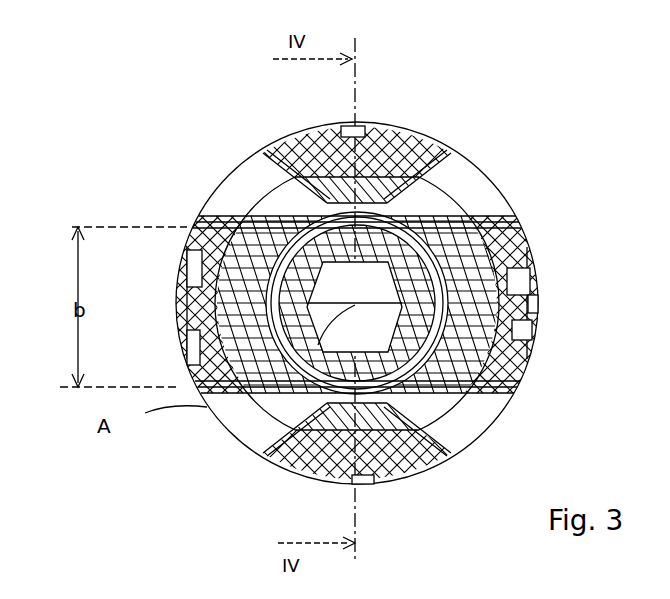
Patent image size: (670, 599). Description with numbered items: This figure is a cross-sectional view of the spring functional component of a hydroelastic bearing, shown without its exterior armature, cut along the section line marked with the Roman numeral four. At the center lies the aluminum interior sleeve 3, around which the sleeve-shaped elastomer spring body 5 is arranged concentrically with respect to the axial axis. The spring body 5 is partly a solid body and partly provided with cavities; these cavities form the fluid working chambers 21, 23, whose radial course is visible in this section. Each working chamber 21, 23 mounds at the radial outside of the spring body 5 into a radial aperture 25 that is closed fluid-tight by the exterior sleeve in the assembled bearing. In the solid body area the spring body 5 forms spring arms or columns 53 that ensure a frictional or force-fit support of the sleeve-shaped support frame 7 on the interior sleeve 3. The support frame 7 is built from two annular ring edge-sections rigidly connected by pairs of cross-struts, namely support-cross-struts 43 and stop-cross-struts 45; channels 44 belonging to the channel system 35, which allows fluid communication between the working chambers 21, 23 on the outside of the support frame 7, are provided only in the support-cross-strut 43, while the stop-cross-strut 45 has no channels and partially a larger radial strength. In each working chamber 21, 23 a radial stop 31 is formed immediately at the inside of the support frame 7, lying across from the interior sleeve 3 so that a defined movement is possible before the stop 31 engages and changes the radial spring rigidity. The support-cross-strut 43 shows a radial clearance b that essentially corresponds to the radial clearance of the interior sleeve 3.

The interior sleeve 3 is at (513, 400).
The elastomer spring body 5 is at (210, 214).
The support frame 7 is at (416, 140).
The working chamber 21 is at (463, 197).
The working chamber 23 is at (465, 425).
The radial aperture 25 is at (245, 167).
The radial stop 31 is at (395, 485).
The channel system 35 is at (176, 357).
The support-cross-strut 43 is at (517, 240).
The channel 44 is at (538, 340).
The stop-cross-strut 45 is at (370, 130).
The spring arm 53 is at (540, 312).